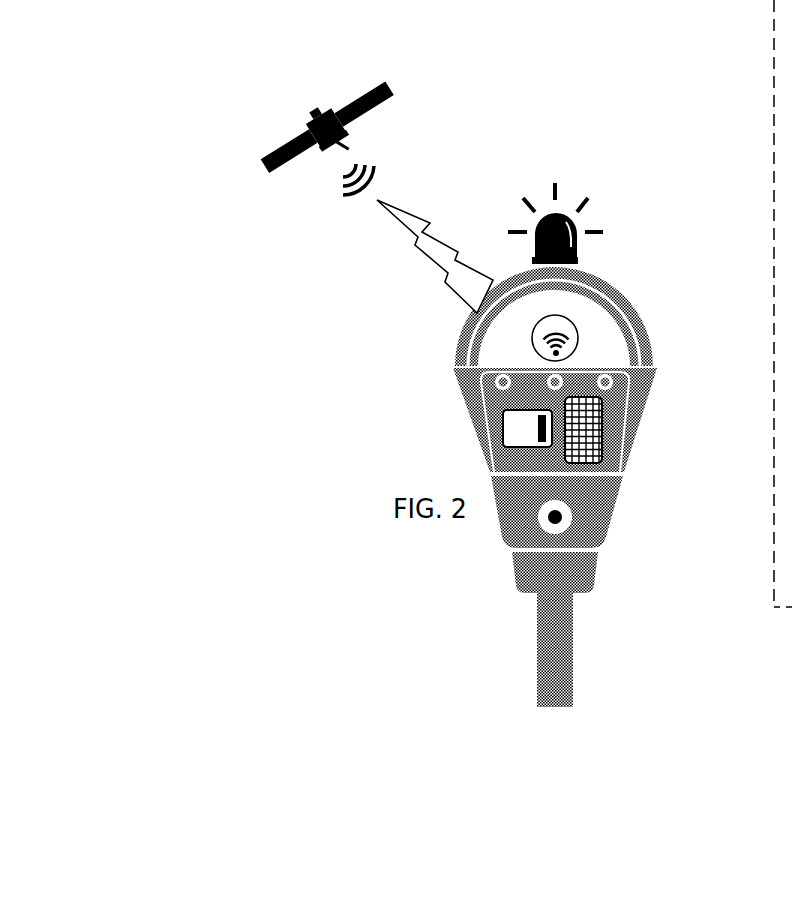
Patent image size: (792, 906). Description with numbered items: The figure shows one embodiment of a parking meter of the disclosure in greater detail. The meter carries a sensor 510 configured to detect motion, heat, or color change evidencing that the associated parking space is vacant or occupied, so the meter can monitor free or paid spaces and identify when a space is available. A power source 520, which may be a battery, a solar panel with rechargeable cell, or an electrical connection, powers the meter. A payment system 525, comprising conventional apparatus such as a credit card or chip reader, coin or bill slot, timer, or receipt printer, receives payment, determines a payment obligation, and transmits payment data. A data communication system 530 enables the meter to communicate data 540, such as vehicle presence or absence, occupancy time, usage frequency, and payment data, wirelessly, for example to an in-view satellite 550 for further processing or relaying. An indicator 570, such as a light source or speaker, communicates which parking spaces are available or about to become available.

The sensor 510 is at (573, 515).
The power source 520 is at (590, 418).
The payment system 525 is at (503, 423).
The data communication system 530 is at (555, 315).
The data 540 is at (418, 243).
The satellite 550 is at (263, 163).
The indicator 570 is at (563, 213).